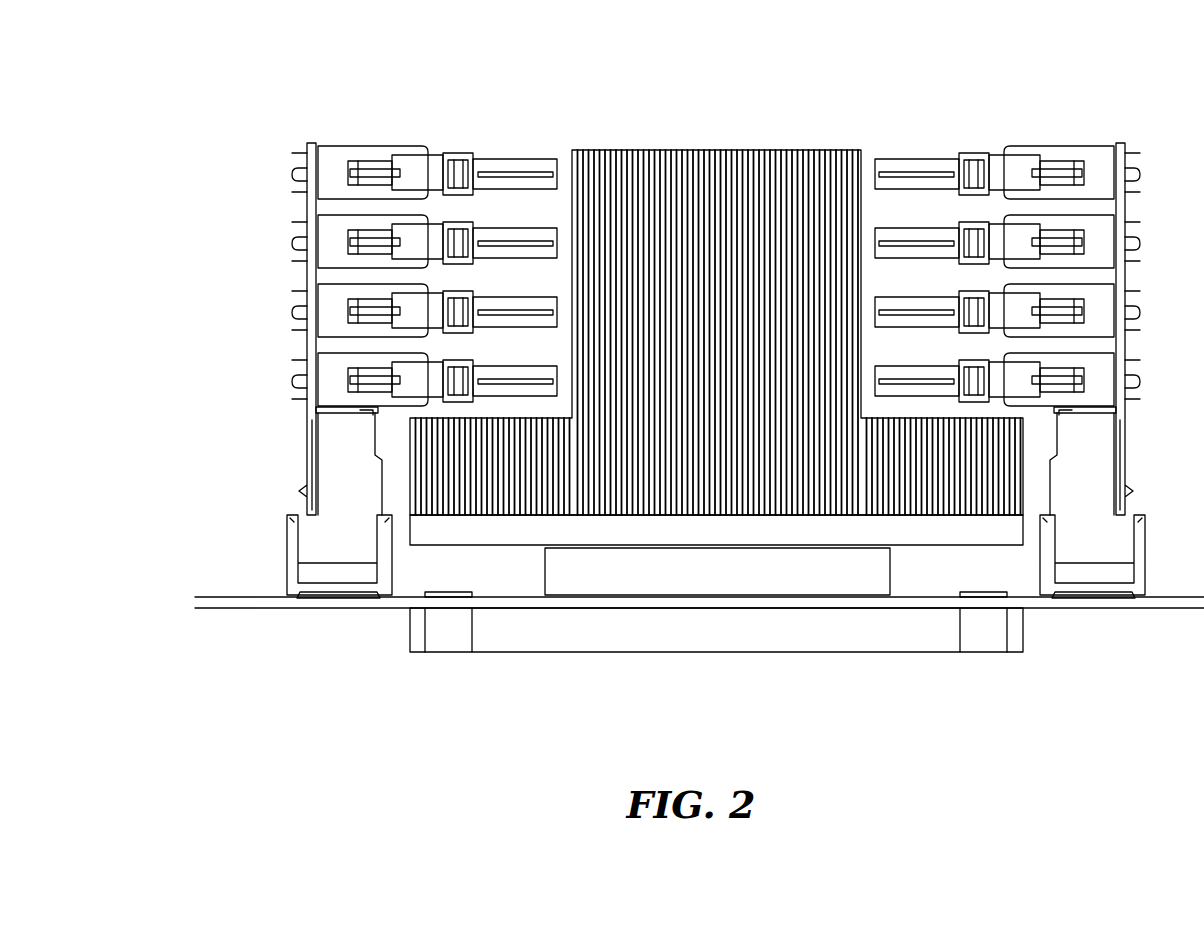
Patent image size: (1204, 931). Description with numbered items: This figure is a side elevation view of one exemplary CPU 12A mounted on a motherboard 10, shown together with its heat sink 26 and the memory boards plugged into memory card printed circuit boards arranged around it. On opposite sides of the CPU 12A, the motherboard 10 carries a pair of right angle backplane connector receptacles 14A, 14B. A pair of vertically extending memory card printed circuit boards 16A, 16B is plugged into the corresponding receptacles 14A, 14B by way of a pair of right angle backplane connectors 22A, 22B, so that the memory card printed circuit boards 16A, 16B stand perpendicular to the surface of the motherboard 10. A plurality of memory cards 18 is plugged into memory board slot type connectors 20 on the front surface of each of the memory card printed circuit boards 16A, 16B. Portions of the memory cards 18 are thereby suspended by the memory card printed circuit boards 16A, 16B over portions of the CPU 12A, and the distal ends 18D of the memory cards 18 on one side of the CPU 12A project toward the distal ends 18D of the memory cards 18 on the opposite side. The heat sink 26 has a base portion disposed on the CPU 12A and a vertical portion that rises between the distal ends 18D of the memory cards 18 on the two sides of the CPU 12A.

The motherboard 10 is at (213, 602).
The CPU 12A is at (717, 571).
The right angle backplane connector receptacle 14A is at (345, 598).
The right angle backplane connector receptacle 14B is at (1091, 598).
The memory card printed circuit board 16A is at (308, 440).
The memory card printed circuit board 16B is at (1124, 442).
The memory cards 18 is at (513, 370).
The distal ends 18D is at (543, 163).
The memory board slot type connectors 20 is at (358, 157).
The right angle backplane connector 22A is at (339, 555).
The right angle backplane connector 22B is at (1092, 555).
The heat sink 26 is at (627, 476).